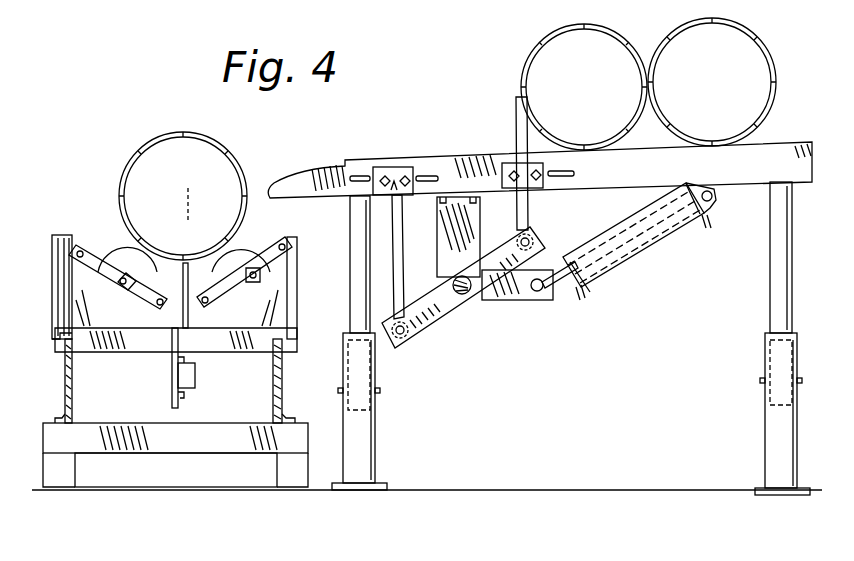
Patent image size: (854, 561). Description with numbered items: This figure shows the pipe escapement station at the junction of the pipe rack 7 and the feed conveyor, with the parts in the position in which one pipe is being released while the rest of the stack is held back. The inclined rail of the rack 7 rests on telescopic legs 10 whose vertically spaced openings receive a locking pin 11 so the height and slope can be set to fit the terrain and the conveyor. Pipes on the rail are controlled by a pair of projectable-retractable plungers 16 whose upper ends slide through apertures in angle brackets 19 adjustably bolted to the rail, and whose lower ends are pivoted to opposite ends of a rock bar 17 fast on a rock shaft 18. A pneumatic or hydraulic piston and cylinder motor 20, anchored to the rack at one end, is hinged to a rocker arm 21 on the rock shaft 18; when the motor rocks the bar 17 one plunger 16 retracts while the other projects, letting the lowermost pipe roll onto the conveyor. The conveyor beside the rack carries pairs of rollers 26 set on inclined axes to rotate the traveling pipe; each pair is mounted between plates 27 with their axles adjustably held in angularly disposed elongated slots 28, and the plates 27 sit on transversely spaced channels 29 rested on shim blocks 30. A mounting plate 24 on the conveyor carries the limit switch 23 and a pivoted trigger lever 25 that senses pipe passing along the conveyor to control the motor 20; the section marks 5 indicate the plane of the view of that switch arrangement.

The section line 5- 5 is at (190, 205).
The rack 7 is at (311, 165).
The telescopic legs 10 is at (375, 440).
The locking pin 11 is at (382, 390).
The projectable-retractable plungers 16 is at (515, 130).
The rock bar 17 is at (440, 328).
The rock shaft 18 is at (470, 300).
The angle bracket 19 is at (390, 170).
The piston and cylinder motor 20 is at (632, 254).
The rocker arm 21 is at (520, 300).
The limit switch 23 is at (196, 379).
The mounting plate 24 is at (172, 373).
The trigger lever 25 is at (190, 318).
The rollers 26 is at (103, 235).
The plates 27 is at (285, 308).
The elongated slots 28 is at (292, 264).
The channels 29 is at (73, 376).
The shim blocks 30 is at (277, 474).